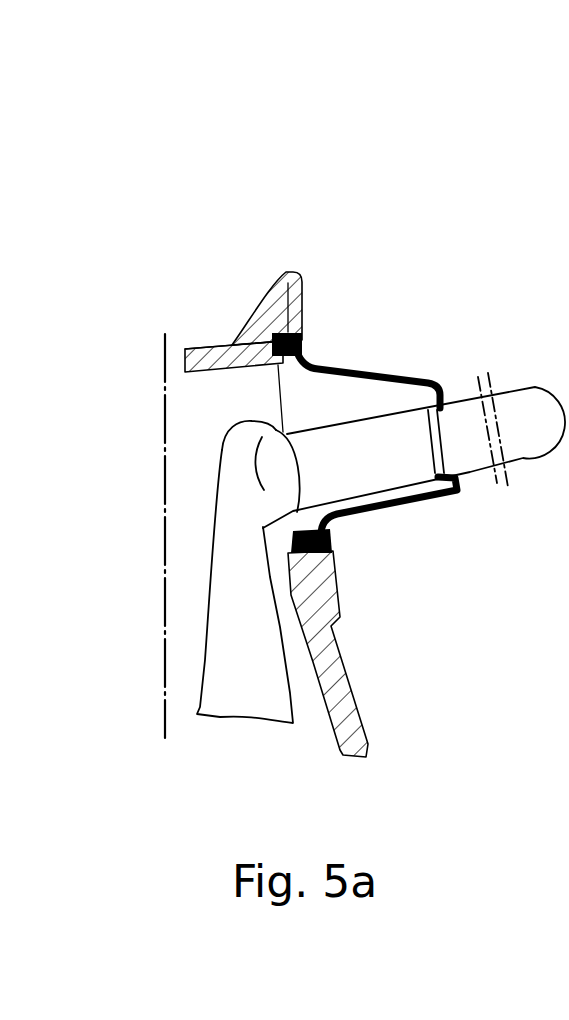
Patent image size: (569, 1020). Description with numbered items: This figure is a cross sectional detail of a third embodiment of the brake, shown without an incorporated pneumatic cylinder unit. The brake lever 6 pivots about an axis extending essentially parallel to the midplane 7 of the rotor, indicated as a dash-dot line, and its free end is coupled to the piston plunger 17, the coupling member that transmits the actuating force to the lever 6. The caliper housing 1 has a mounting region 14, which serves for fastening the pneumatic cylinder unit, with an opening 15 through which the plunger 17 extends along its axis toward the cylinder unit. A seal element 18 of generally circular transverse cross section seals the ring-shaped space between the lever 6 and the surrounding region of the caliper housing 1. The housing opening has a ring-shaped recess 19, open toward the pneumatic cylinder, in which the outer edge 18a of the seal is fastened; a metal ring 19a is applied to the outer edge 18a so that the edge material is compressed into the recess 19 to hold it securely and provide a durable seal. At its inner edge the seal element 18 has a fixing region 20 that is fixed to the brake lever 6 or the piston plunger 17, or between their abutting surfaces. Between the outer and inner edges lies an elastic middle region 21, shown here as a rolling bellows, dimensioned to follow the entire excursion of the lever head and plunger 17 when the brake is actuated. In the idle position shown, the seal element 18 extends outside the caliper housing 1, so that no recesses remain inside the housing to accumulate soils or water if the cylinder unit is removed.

The caliper housing 1 is at (193, 348).
The brake lever 6 is at (233, 680).
The midplane of the rotor 7 is at (160, 358).
The mounting region 14 is at (337, 573).
The opening 15 is at (241, 387).
The piston plunger 17 is at (516, 408).
The seal element 18 is at (342, 362).
The outer edge of the seal 18a is at (325, 546).
The ring-shaped recess 19 is at (294, 273).
The metal ring 19a is at (272, 287).
The fixing region 20 is at (427, 408).
The elastic middle region 21 is at (418, 500).